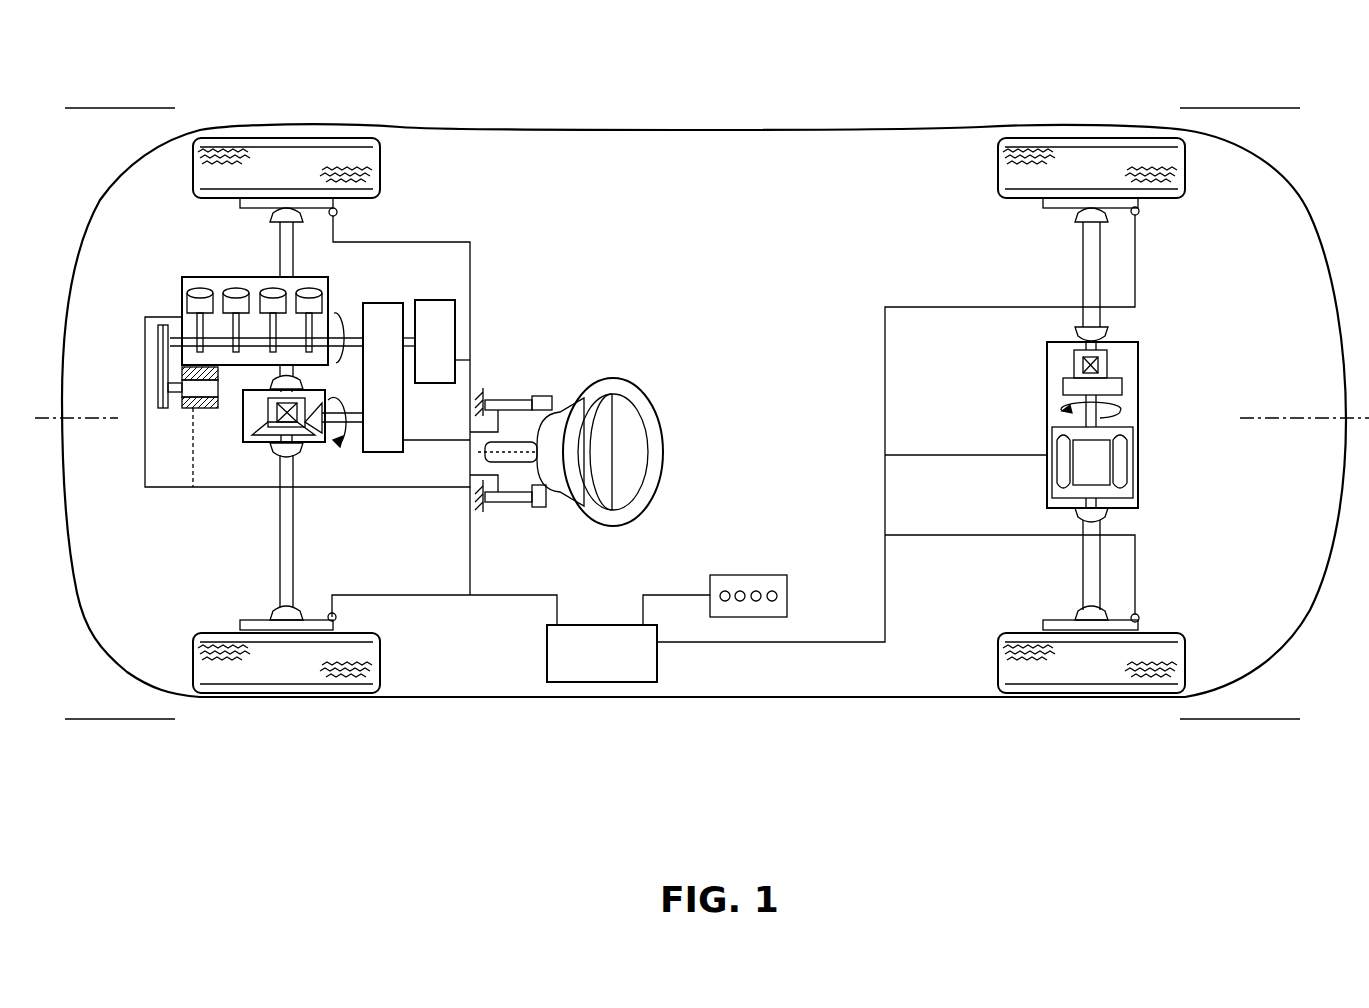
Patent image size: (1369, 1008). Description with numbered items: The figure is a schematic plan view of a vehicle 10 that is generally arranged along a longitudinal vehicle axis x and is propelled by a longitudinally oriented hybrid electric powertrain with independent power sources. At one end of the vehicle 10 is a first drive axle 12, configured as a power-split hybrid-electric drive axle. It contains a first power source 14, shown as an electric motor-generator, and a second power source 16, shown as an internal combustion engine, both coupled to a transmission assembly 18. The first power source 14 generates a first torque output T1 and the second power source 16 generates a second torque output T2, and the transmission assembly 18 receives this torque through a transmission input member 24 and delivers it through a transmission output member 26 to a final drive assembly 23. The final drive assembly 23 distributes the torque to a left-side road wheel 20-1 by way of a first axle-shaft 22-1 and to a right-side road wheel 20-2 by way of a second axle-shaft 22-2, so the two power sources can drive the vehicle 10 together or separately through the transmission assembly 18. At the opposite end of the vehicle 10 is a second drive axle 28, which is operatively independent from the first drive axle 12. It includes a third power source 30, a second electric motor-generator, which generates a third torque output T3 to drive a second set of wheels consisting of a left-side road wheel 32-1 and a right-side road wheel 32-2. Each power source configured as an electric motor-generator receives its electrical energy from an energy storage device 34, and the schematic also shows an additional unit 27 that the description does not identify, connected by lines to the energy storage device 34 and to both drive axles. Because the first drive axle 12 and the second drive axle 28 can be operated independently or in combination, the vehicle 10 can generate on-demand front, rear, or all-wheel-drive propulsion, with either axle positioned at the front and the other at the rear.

The vehicle 10 is at (530, 92).
The first drive axle 12 is at (133, 300).
The first power source 14 is at (446, 354).
The second power source 16 is at (226, 278).
The transmission assembly 18 is at (394, 389).
The first road wheel 20-1 is at (262, 699).
The second road wheel 20-2 is at (253, 131).
The first axle-shaft 22-1 is at (277, 563).
The second axle-shaft 22-2 is at (279, 262).
The final drive assembly 23 is at (248, 433).
The transmission input member 24 is at (348, 337).
The transmission output member 26 is at (351, 426).
The controller 27 is at (613, 662).
The second drive axle 28 is at (1150, 380).
The third power source 30 is at (1134, 470).
The first road wheel of second set 32-1 is at (1157, 699).
The second road wheel of second set 32-2 is at (1105, 120).
The energy storage device 34 is at (745, 575).
The first torque output T1 is at (340, 322).
The second torque output T2 is at (333, 449).
The third torque output T3 is at (1062, 410).
The longitudinal vehicle axis x is at (45, 422).